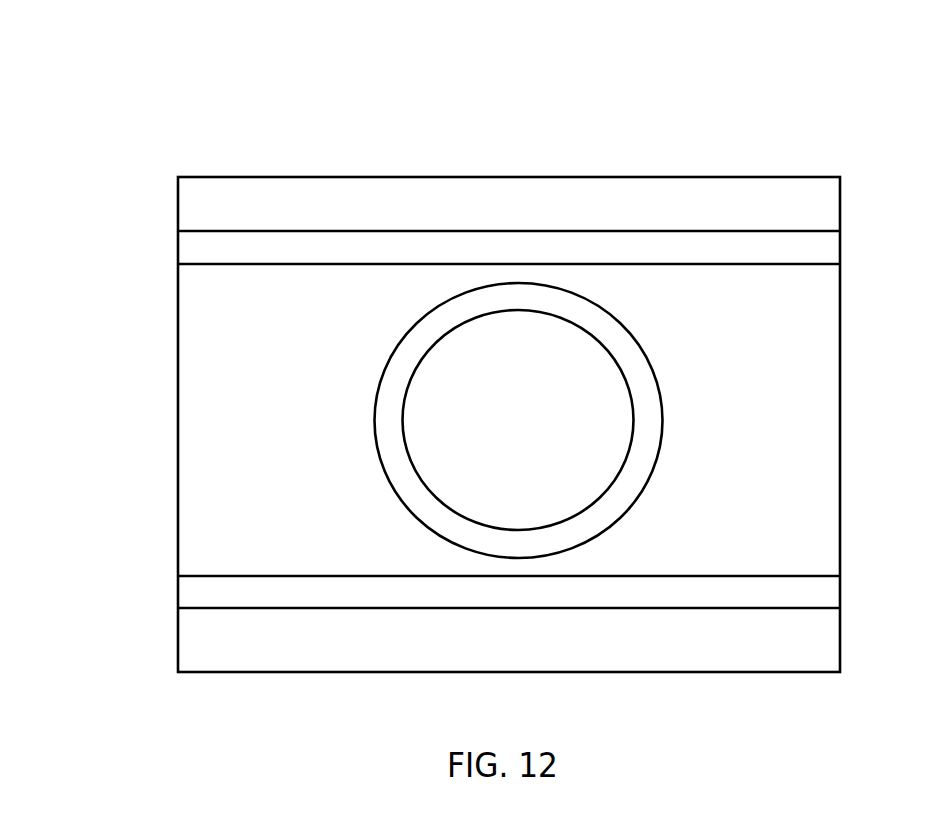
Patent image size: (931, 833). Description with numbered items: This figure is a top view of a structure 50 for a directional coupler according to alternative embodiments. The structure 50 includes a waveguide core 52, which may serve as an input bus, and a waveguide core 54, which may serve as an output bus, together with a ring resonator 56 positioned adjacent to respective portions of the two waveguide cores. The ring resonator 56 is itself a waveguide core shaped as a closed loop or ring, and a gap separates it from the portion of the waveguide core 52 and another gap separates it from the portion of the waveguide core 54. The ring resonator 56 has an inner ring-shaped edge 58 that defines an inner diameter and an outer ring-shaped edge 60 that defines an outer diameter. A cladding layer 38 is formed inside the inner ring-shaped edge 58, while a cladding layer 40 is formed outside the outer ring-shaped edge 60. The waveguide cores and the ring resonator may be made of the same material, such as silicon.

The structure 50 is at (174, 74).
The waveguide core 52 is at (210, 253).
The waveguide core 54 is at (202, 600).
The cladding layer 40 is at (222, 353).
The outer ring-shaped edge 60 is at (638, 340).
The ring resonator 56 is at (388, 426).
The inner ring-shaped edge 58 is at (416, 471).
The cladding layer 38 is at (582, 420).